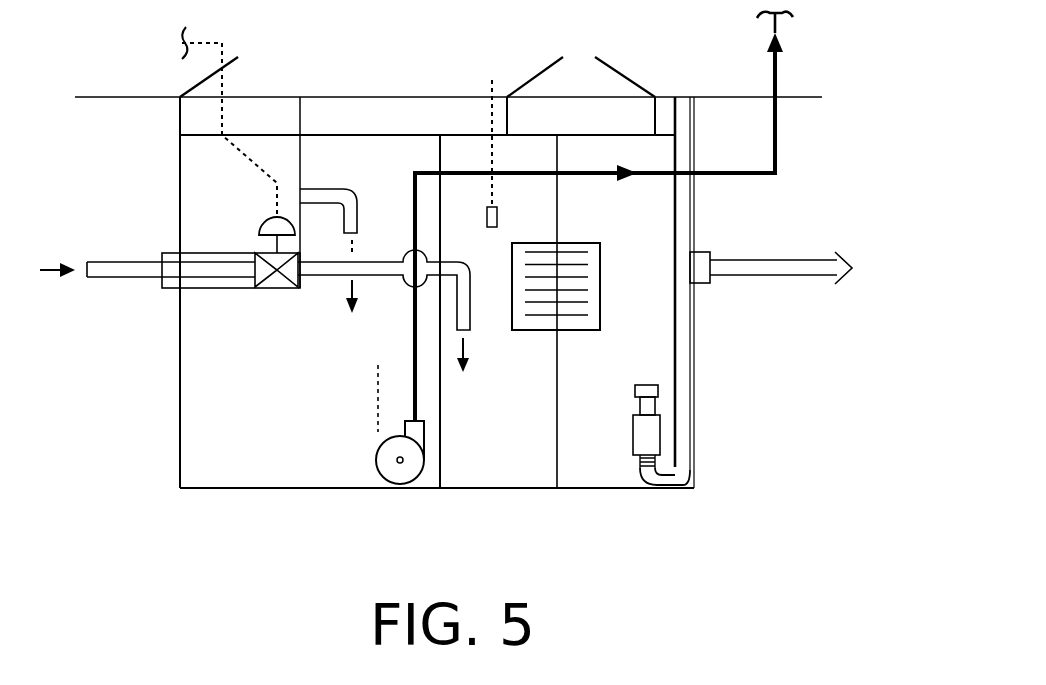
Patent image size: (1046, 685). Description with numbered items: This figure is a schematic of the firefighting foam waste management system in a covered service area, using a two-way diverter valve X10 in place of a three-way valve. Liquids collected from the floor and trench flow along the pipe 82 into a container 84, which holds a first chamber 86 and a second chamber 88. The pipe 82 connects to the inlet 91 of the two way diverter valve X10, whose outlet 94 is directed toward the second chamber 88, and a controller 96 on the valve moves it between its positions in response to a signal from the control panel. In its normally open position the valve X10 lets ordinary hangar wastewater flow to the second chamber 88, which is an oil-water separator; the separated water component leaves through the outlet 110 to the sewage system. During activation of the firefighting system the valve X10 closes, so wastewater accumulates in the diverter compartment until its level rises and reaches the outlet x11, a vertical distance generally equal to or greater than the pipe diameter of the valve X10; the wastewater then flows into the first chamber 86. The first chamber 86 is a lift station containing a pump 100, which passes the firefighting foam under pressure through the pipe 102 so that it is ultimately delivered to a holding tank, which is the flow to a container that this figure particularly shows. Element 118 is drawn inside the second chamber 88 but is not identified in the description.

The pipe 82 is at (120, 280).
The container 84 is at (693, 420).
The first chamber 86 is at (300, 462).
The second chamber 88 is at (517, 475).
The inlet 91 is at (245, 260).
The outlet 94 is at (300, 283).
The controller 96 is at (258, 223).
The pump 100 is at (398, 478).
The pipe 102 is at (781, 30).
The outlet 110 is at (700, 285).
The heat exchanger 118 is at (600, 300).
The two way diverter valve X10 is at (273, 285).
The outlet x11 is at (328, 183).